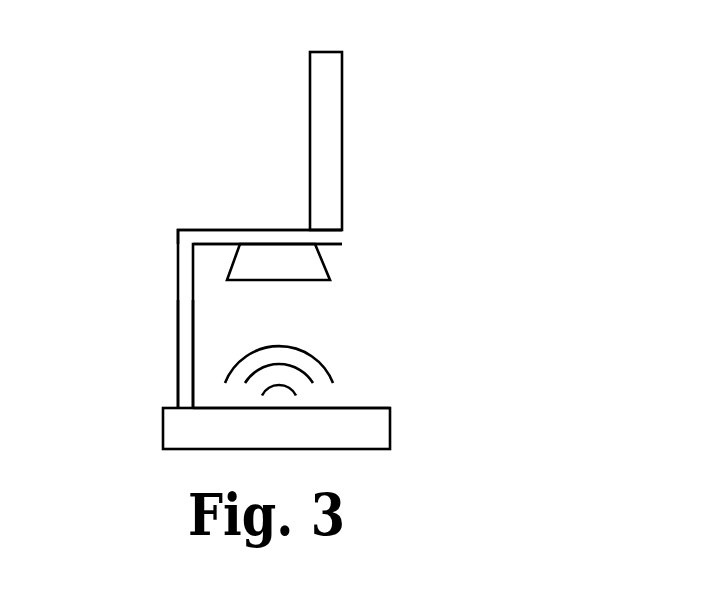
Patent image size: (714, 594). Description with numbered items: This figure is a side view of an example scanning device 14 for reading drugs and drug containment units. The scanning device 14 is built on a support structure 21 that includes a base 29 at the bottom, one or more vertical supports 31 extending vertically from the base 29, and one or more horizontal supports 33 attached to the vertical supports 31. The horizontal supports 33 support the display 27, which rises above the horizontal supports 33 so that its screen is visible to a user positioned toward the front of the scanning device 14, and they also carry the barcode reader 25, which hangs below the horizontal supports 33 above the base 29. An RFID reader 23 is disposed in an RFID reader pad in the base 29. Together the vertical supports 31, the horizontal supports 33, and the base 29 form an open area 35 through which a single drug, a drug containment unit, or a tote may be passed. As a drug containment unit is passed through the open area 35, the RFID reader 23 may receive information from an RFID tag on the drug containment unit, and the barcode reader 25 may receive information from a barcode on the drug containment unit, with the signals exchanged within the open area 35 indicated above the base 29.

The scanning device 14 is at (466, 149).
The support structure 21 is at (164, 361).
The RFID reader 23 is at (351, 395).
The barcode reader 25 is at (306, 264).
The display 27 is at (297, 75).
The base 29 is at (149, 432).
The vertical supports 31 is at (164, 277).
The horizontal supports 33 is at (206, 217).
The open area 35 is at (304, 320).